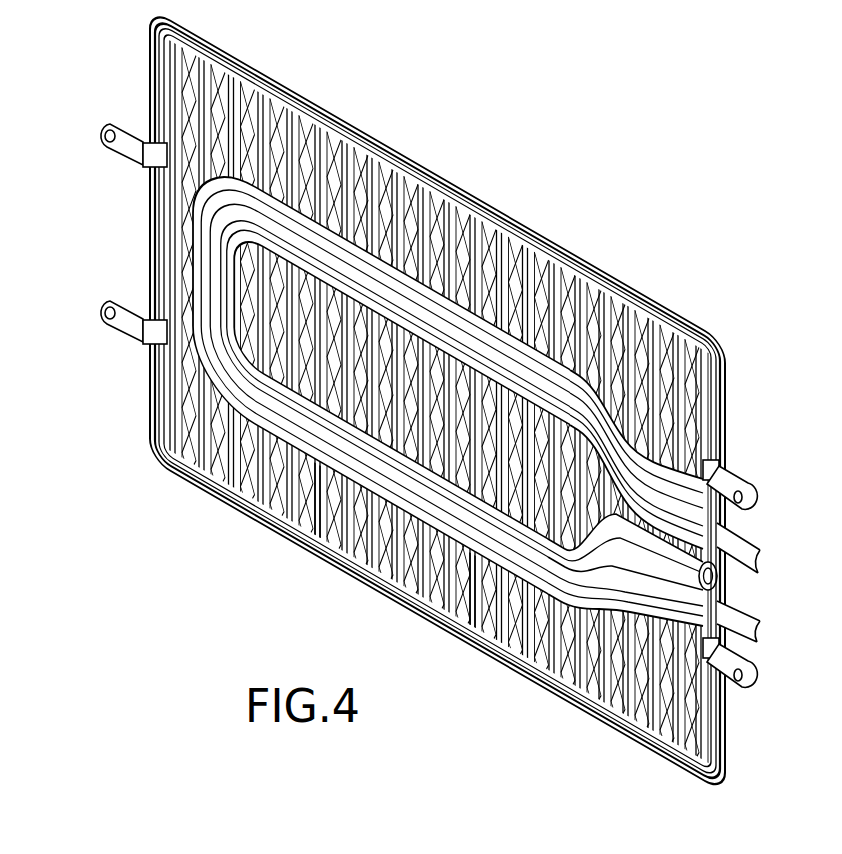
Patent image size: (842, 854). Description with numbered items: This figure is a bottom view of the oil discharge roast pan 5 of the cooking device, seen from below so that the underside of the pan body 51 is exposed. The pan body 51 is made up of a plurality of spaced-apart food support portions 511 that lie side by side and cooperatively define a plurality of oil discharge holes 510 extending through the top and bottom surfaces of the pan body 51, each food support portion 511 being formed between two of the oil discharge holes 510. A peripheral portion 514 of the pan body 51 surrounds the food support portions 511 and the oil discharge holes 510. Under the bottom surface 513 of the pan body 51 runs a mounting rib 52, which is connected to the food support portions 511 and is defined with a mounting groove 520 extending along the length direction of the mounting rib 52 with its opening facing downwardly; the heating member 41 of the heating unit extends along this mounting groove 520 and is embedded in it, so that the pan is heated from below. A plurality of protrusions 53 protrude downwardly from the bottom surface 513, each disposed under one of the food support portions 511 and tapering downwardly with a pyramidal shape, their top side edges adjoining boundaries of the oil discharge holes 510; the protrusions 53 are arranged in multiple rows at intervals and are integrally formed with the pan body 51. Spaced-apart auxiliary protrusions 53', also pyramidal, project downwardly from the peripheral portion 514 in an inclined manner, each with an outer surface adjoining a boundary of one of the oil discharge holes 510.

The oil discharge roast pan 5 is at (375, 126).
The pan body 51 is at (425, 172).
The peripheral portion 514 is at (437, 400).
The oil discharge holes 510 is at (640, 345).
The food support portions 511 is at (345, 560).
The bottom surface 513 is at (195, 62).
The mounting rib 52 is at (703, 463).
The mounting groove 520 is at (647, 500).
The protrusions 53 is at (440, 403).
The auxiliary protrusions 53' is at (538, 422).
The heating member 41 is at (746, 552).